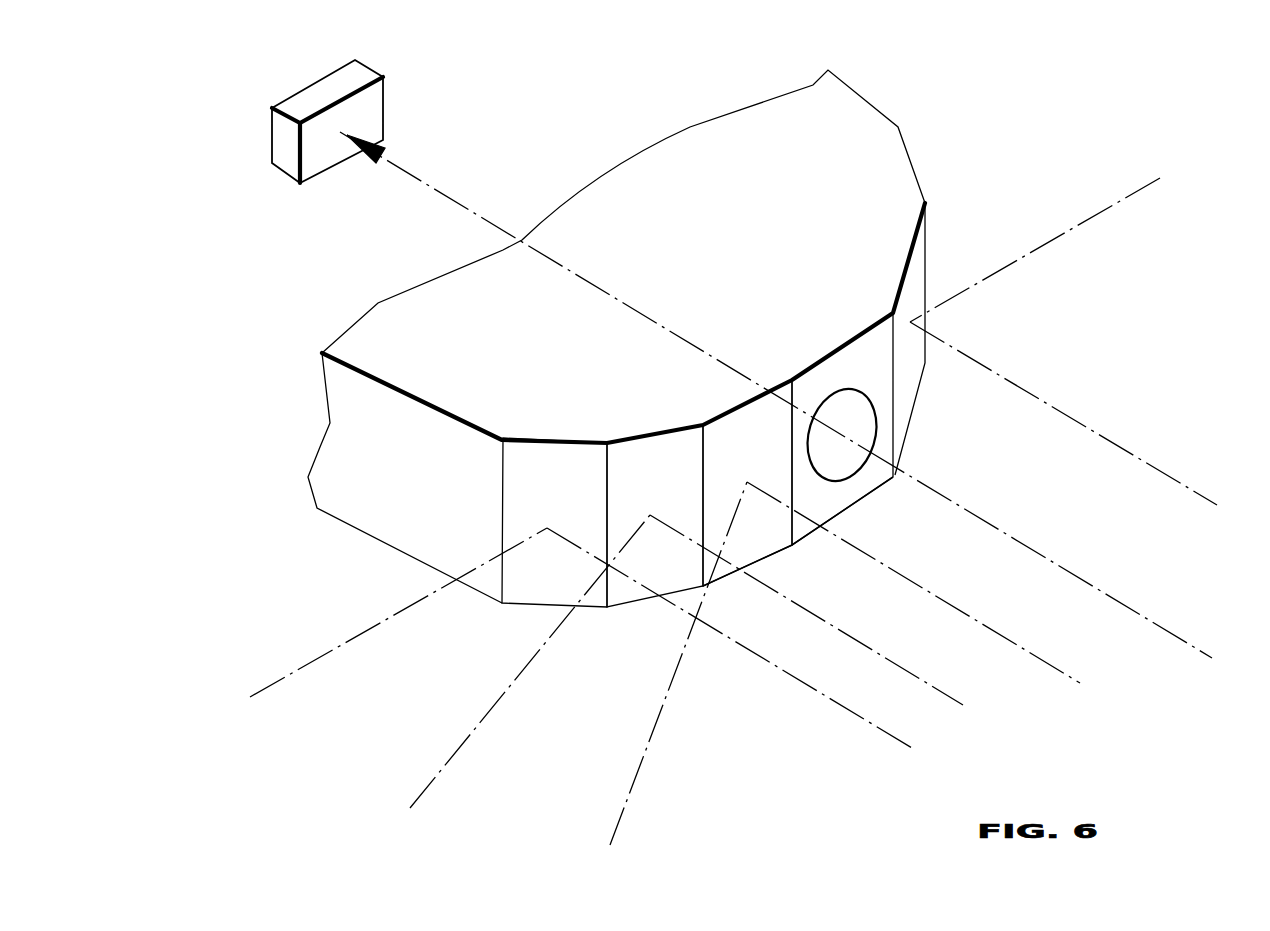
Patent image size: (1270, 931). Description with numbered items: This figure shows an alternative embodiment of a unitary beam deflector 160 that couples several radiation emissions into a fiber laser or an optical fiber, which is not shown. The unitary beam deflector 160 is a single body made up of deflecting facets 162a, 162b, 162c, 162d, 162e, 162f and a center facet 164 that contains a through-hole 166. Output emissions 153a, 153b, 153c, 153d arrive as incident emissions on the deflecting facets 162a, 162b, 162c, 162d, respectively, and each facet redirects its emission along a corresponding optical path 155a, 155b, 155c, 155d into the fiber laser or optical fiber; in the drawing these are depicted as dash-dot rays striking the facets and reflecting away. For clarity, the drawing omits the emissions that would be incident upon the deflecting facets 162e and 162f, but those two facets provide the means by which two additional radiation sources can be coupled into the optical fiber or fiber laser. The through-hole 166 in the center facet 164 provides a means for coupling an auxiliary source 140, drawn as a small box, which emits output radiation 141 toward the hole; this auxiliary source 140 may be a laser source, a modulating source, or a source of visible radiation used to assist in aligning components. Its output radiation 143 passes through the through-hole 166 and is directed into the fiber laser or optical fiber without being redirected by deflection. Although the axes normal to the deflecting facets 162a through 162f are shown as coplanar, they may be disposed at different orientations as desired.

The auxiliary source 140 is at (378, 76).
The output radiation 141 is at (374, 150).
The output radiation 143 is at (1143, 617).
The output emission 153a is at (337, 652).
The output emission 153b is at (446, 770).
The output emission 153c is at (624, 798).
The output emission 153d is at (1132, 196).
The optical path 155a is at (862, 718).
The optical path 155b is at (923, 680).
The optical path 155c is at (1013, 647).
The optical path 155d is at (1197, 490).
The unitary beam deflector 160 is at (367, 308).
The deflecting facet 162a is at (532, 590).
The deflecting facet 162b is at (628, 592).
The deflecting facet 162c is at (772, 540).
The deflecting facet 162d is at (910, 382).
The deflecting facet 162e is at (918, 177).
The deflecting facet 162f is at (875, 106).
The center facet 164 is at (840, 497).
The through-hole 166 is at (875, 433).